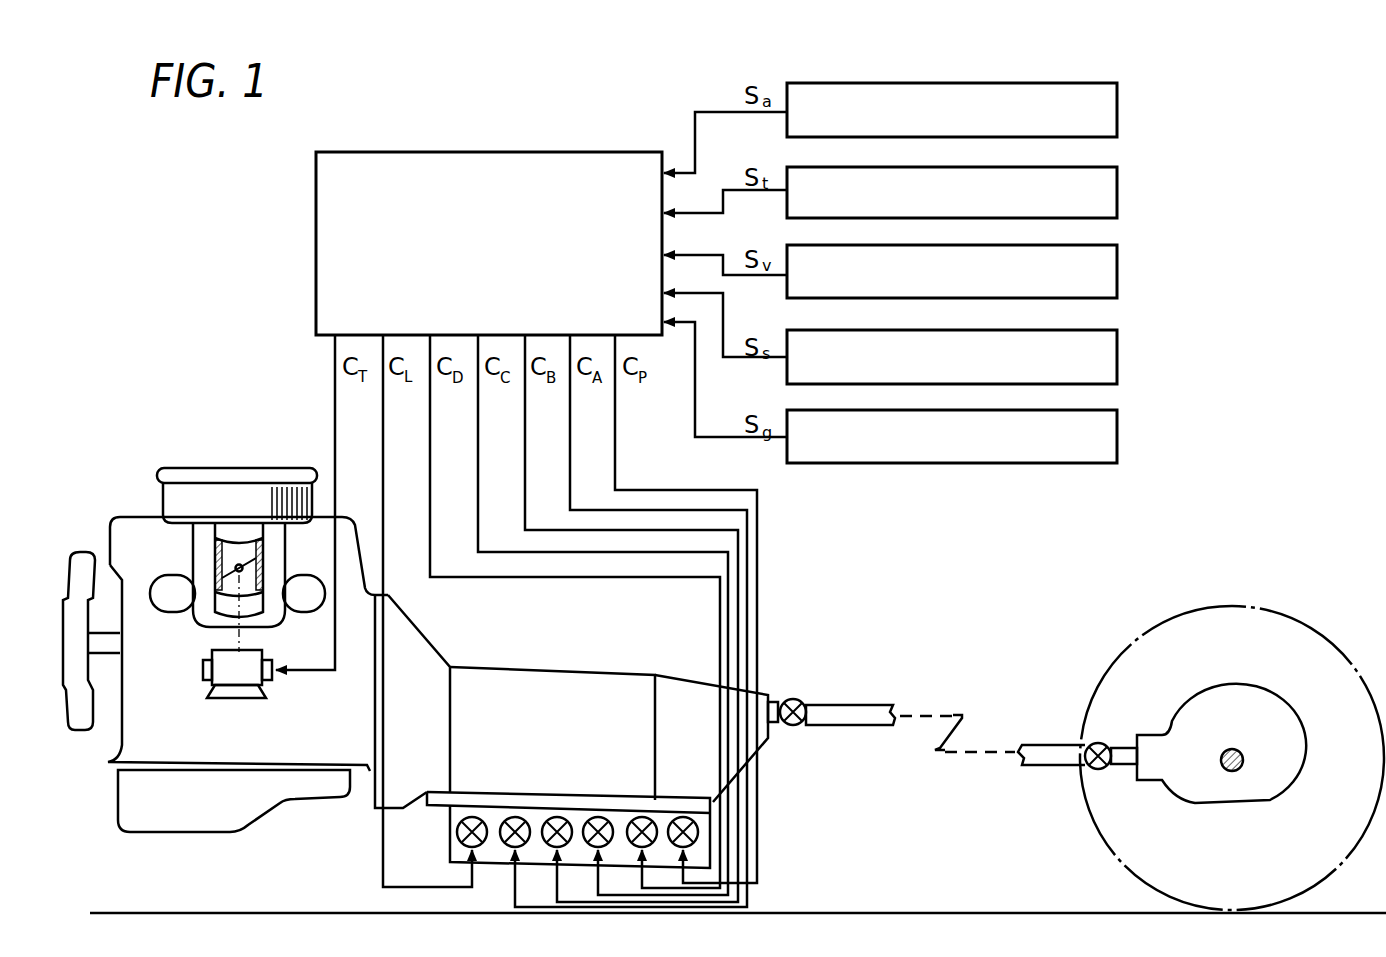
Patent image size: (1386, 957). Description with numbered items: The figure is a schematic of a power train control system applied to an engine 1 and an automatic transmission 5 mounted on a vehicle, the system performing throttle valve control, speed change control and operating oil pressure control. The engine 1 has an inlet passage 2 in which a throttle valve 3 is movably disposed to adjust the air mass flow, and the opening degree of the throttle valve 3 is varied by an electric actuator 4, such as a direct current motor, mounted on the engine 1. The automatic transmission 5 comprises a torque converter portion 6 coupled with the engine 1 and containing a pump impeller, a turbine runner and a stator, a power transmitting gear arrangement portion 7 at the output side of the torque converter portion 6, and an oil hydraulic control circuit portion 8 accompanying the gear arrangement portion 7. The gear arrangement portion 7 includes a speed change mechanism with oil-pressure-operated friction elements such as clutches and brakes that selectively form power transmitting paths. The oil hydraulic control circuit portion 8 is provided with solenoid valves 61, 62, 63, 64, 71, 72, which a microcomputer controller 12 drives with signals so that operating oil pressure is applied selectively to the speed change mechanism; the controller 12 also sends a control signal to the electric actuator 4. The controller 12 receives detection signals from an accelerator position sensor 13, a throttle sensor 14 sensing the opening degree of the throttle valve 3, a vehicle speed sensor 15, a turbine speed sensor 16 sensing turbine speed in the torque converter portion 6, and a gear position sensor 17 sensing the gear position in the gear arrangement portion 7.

The engine 1 is at (194, 462).
The inlet passage 2 is at (243, 537).
The throttle valve 3 is at (215, 560).
The electric actuator 4 is at (205, 672).
The automatic transmission 5 is at (677, 678).
The torque converter portion 6 is at (432, 660).
The power transmitting gear arrangement portion 7 is at (617, 683).
The oil hydraulic control circuit portion 8 is at (450, 835).
The controller 12 is at (518, 152).
The accelerator position sensor 13 is at (1119, 122).
The throttle sensor 14 is at (1119, 203).
The vehicle speed sensor 15 is at (1119, 285).
The turbine speed sensor 16 is at (1119, 370).
The gear position sensor 17 is at (1119, 450).
The solenoid valve 61 is at (476, 815).
The solenoid valve 62 is at (518, 815).
The solenoid valve 63 is at (560, 815).
The solenoid valve 64 is at (684, 815).
The solenoid valve 71 is at (600, 815).
The solenoid valve 72 is at (643, 815).